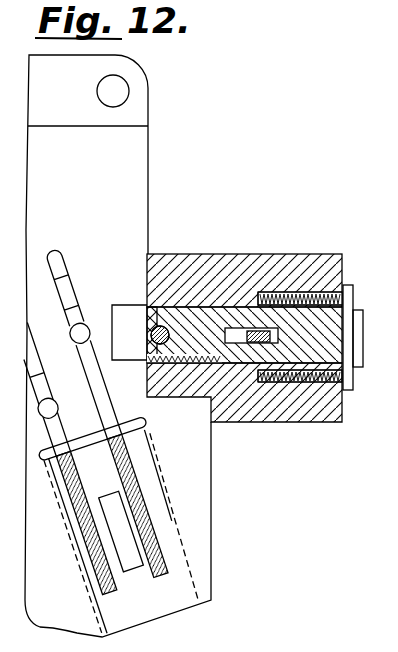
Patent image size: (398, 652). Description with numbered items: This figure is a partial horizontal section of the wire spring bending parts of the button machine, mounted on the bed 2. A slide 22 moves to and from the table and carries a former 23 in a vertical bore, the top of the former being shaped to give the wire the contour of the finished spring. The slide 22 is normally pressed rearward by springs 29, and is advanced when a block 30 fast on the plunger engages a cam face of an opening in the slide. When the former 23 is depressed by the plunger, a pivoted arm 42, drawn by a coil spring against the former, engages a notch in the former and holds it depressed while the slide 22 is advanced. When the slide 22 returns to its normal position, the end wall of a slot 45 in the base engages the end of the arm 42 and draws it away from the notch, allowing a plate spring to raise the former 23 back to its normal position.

The bed 2 is at (211, 510).
The slide 22 is at (343, 353).
The former 23 is at (150, 334).
The springs 29 is at (342, 297).
The block 30 is at (273, 337).
The pivoted arm 42 is at (150, 364).
The slot 45 is at (162, 366).